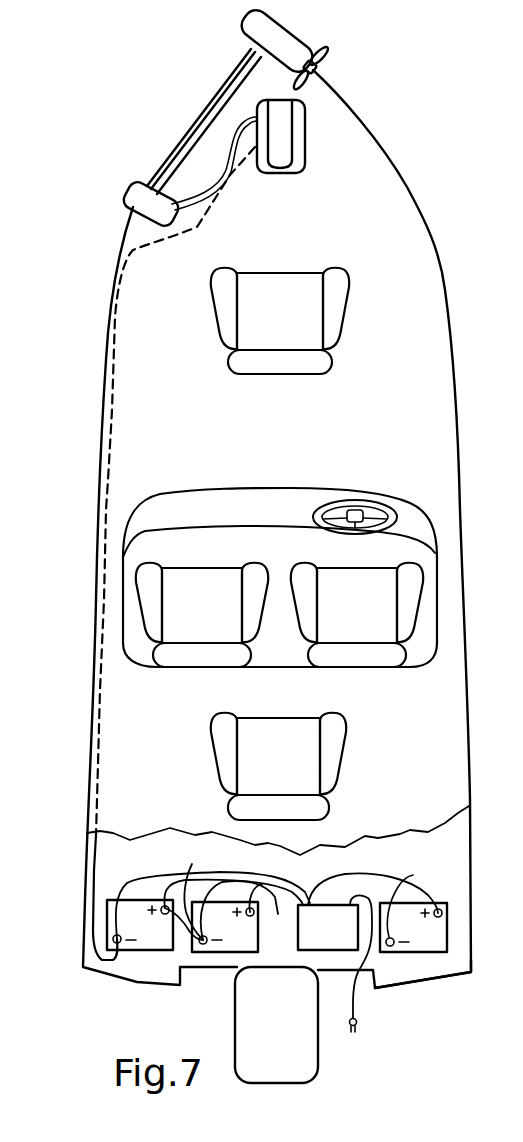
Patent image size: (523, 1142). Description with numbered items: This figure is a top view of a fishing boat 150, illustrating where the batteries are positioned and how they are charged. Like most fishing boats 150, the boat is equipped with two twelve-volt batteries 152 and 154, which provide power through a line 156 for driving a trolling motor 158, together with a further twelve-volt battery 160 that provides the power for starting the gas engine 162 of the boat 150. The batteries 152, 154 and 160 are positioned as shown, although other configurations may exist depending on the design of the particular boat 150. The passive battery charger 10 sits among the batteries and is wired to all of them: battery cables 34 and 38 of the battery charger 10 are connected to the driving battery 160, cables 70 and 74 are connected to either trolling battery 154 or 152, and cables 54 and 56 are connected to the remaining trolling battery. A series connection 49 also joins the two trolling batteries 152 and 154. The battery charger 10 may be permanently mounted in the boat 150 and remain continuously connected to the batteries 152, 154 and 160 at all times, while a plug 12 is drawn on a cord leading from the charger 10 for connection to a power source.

The battery charger 10 is at (340, 939).
The AC power plug 12 is at (357, 1023).
The battery cable 34 is at (438, 913).
The battery cable 38 is at (390, 928).
The series connection 49 is at (194, 891).
The cable 54 is at (165, 908).
The cable 56 is at (117, 893).
The cable 70 is at (247, 910).
The cable 74 is at (218, 878).
The fishing boat 150 is at (433, 230).
The 12-volt battery 152 is at (150, 940).
The 12-volt battery 154 is at (227, 928).
The line 156 is at (95, 868).
The trolling motor 158 is at (127, 200).
The 12-volt battery 160 is at (437, 933).
The gas engine 162 is at (312, 1068).